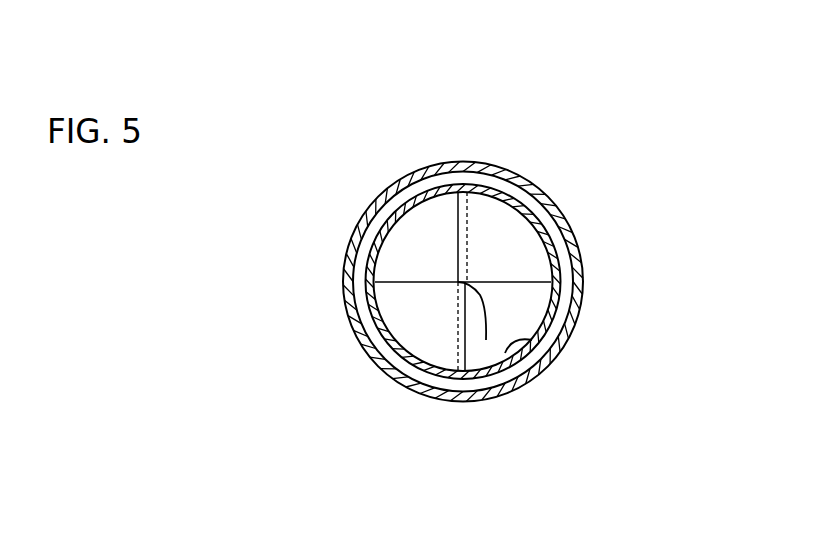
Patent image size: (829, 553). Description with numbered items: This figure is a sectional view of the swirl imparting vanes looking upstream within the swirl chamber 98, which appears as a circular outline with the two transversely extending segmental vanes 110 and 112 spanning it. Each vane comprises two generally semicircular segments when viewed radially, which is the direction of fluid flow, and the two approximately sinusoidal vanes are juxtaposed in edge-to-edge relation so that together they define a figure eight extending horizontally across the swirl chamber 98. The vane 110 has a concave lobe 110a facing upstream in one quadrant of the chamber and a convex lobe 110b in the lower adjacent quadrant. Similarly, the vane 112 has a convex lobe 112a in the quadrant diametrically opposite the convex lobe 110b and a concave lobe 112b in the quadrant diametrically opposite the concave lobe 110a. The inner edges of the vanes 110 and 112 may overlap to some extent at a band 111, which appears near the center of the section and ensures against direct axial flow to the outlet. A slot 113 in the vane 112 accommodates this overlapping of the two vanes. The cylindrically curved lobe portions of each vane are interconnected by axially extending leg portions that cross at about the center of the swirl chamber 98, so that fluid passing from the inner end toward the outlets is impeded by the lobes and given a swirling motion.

The swirl chamber 98 is at (506, 352).
The vane 110 is at (437, 237).
The concave lobe 110a is at (410, 253).
The convex lobe 110b is at (427, 337).
The band 111 is at (464, 205).
The vane 112 is at (517, 228).
The convex lobe 112a is at (505, 258).
The concave lobe 112b is at (517, 333).
The slot 113 is at (486, 340).